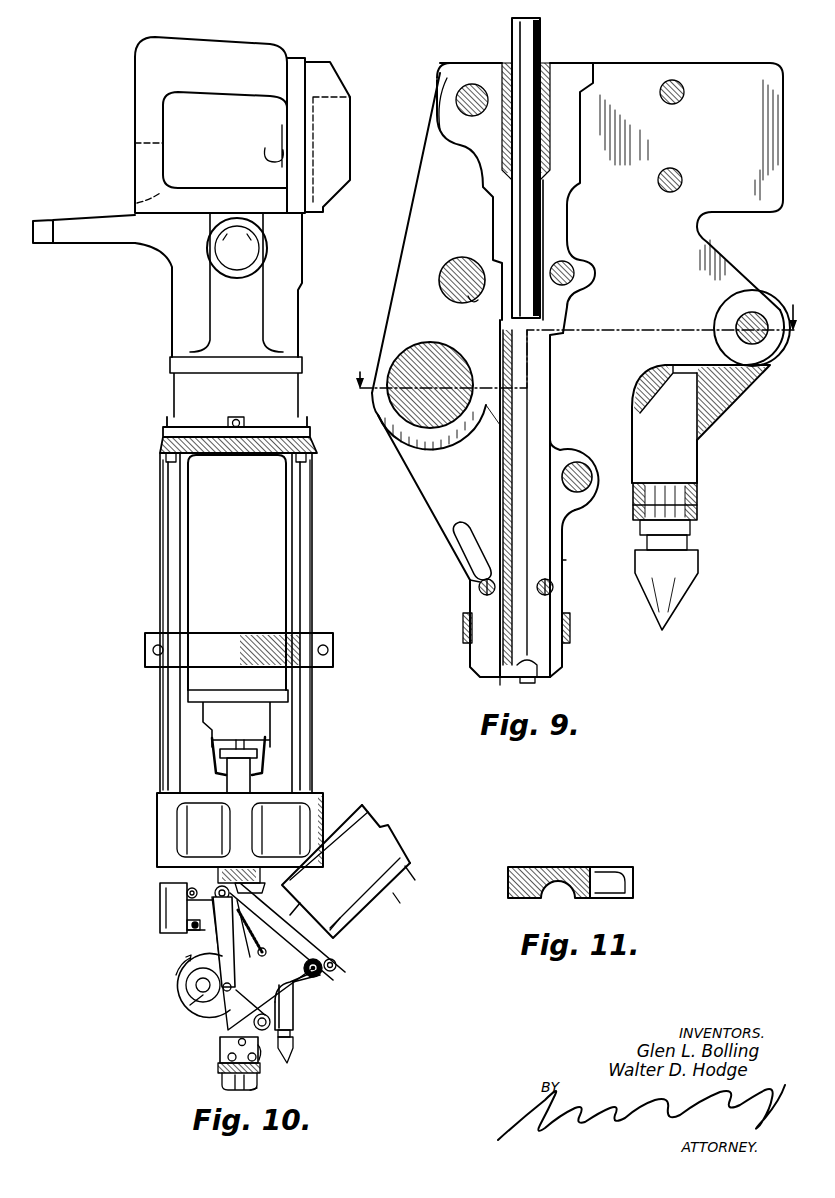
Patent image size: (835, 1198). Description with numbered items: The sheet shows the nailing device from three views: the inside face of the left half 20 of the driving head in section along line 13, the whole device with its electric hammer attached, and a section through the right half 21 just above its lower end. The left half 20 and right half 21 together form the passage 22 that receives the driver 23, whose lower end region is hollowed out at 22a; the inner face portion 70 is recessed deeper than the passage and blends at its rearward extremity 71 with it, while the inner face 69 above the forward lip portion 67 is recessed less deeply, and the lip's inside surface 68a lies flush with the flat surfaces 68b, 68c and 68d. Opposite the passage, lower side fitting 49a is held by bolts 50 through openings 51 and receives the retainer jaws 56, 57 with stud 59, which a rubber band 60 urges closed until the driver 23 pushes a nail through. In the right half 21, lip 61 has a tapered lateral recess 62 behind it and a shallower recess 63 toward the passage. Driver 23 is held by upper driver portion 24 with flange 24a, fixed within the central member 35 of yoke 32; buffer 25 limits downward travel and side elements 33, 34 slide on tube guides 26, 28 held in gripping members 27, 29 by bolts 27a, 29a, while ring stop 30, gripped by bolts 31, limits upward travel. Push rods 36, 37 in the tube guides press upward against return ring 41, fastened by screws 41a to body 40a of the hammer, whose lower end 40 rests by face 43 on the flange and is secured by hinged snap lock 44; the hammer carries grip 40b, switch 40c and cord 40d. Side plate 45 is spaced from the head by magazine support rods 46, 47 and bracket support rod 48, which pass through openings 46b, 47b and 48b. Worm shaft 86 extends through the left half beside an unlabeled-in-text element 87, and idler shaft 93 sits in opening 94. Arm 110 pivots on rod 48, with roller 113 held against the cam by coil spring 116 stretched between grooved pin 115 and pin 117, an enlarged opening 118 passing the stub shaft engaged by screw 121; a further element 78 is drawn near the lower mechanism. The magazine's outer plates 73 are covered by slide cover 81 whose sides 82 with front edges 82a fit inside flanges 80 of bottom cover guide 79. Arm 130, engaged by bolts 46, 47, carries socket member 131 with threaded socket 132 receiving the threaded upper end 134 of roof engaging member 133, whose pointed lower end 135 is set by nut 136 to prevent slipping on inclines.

In FIG. 9, the section line 13— 13 is at (574, 318).
In FIG. 9, the left half of driving head 20 is at (437, 525).
In FIG. 10, the right half of driving head 21 is at (200, 1020).
In FIG. 9, the passage 22 is at (520, 445).
In FIG. 11, the passage 22 is at (545, 867).
In FIG. 9, the hollowed out lower end portion 22a is at (518, 680).
In FIG. 9, the driver 23 is at (540, 50).
In FIG. 10, the upper driver portion 24 is at (252, 785).
In FIG. 10, the flange 24a is at (222, 752).
In FIG. 10, the buffer 25 is at (262, 880).
In FIG. 10, the tube guide 26 is at (160, 762).
In FIG. 10, the gripping member 27 is at (160, 912).
In FIG. 10, the bolt 27a is at (188, 892).
In FIG. 10, the tube guide 28 is at (312, 760).
In FIG. 9, the gripping member 29 is at (760, 63).
In FIG. 9, the bolt 29a is at (672, 80).
In FIG. 10, the ring stop 30 is at (215, 640).
In FIG. 10, the bolts 31 is at (150, 648).
In FIG. 10, the yoke 32 is at (235, 795).
In FIG. 10, the side element 33 is at (160, 830).
In FIG. 10, the side element 34 is at (323, 815).
In FIG. 10, the central member 35 is at (225, 832).
In FIG. 10, the push rod 36 is at (160, 462).
In FIG. 10, the push rod 37 is at (312, 465).
In FIG. 10, the lower end of electric hammer 40 is at (275, 566).
In FIG. 10, the hammer body 40a is at (178, 401).
In FIG. 10, the grip 40b is at (245, 57).
In FIG. 10, the switch 40c is at (272, 150).
In FIG. 10, the power cable or cord 40d is at (42, 217).
In FIG. 10, the return ring 41 is at (310, 440).
In FIG. 10, the screws 41a is at (236, 413).
In FIG. 10, the face 43 is at (240, 747).
In FIG. 10, the hinged snap lock 44 is at (263, 760).
In FIG. 10, the side plate 45 is at (336, 963).
In FIG. 10, the magazine support rod 46 is at (304, 968).
In FIG. 9, the magazine support rod 46 is at (740, 318).
In FIG. 9, the opening 46b is at (701, 424).
In FIG. 10, the magazine support rod 47 is at (261, 1014).
In FIG. 9, the magazine support rod 47 is at (587, 488).
In FIG. 9, the opening 47b is at (586, 493).
In FIG. 10, the bracket support rod 48 is at (217, 889).
In FIG. 9, the bracket support rod 48 is at (462, 92).
In FIG. 9, the opening 48b is at (457, 105).
In FIG. 10, the lower side fitting 49a is at (257, 1088).
In FIG. 10, the bolts 50 is at (260, 1060).
In FIG. 9, the bolts 50 is at (480, 592).
In FIG. 9, the openings 51 is at (479, 587).
In FIG. 9, the retainer jaw 56 is at (530, 683).
In FIG. 10, the retainer jaw 57 is at (224, 1084).
In FIG. 10, the stud 59 is at (232, 1050).
In FIG. 10, the band 60 is at (218, 1068).
In FIG. 9, the band 60 is at (570, 650).
In FIG. 11, the lip 61 is at (633, 883).
In FIG. 11, the tapered lateral recess 62 is at (610, 871).
In FIG. 11, the recess 63 is at (582, 867).
In FIG. 9, the forward lip portion 67 is at (455, 560).
In FIG. 9, the inside surface 68a is at (472, 565).
In FIG. 9, the flat surface 68b is at (562, 567).
In FIG. 9, the flat surface 68c is at (500, 235).
In FIG. 9, the flat surface 68d is at (752, 313).
In FIG. 9, the inner face 69 is at (440, 483).
In FIG. 9, the inner face portion 70 is at (392, 296).
In FIG. 9, the rearward extremity 71 is at (509, 352).
In FIG. 10, the outer plates of magazine 73 is at (297, 912).
In FIG. 10, the pin 78 is at (238, 1042).
In FIG. 10, the magazine bottom cover guide 79 is at (421, 878).
In FIG. 10, the side flange portions 80 is at (408, 900).
In FIG. 10, the slide cover 81 is at (362, 806).
In FIG. 10, the sides of slide cover 82 is at (395, 836).
In FIG. 10, the front edges of side plates 82a is at (335, 915).
In FIG. 10, the worm shaft 86 is at (205, 995).
In FIG. 9, the worm shaft 86 is at (436, 426).
In FIG. 9, the shaft 87 is at (440, 360).
In FIG. 9, the idler shaft 93 is at (481, 308).
In FIG. 9, the opening 94 is at (452, 270).
In FIG. 10, the arm 110 is at (195, 960).
In FIG. 10, the roller 113 is at (236, 986).
In FIG. 10, the grooved pin 115 is at (257, 885).
In FIG. 10, the coil spring 116 is at (258, 940).
In FIG. 10, the pin 117 is at (266, 952).
In FIG. 10, the enlarged opening 118 is at (258, 938).
In FIG. 10, the screw 121 is at (190, 930).
In FIG. 10, the arm 130 is at (318, 990).
In FIG. 9, the arm 130 is at (720, 400).
In FIG. 10, the socket member 131 is at (293, 1012).
In FIG. 9, the socket member 131 is at (697, 455).
In FIG. 9, the threaded socket 132 is at (697, 506).
In FIG. 9, the roof engaging member 133 is at (687, 543).
In FIG. 9, the threaded upper end 134 is at (697, 490).
In FIG. 10, the pointed lower end 135 is at (289, 1053).
In FIG. 9, the pointed lower end 135 is at (683, 600).
In FIG. 10, the nut 136 is at (291, 1033).
In FIG. 9, the nut 136 is at (690, 526).